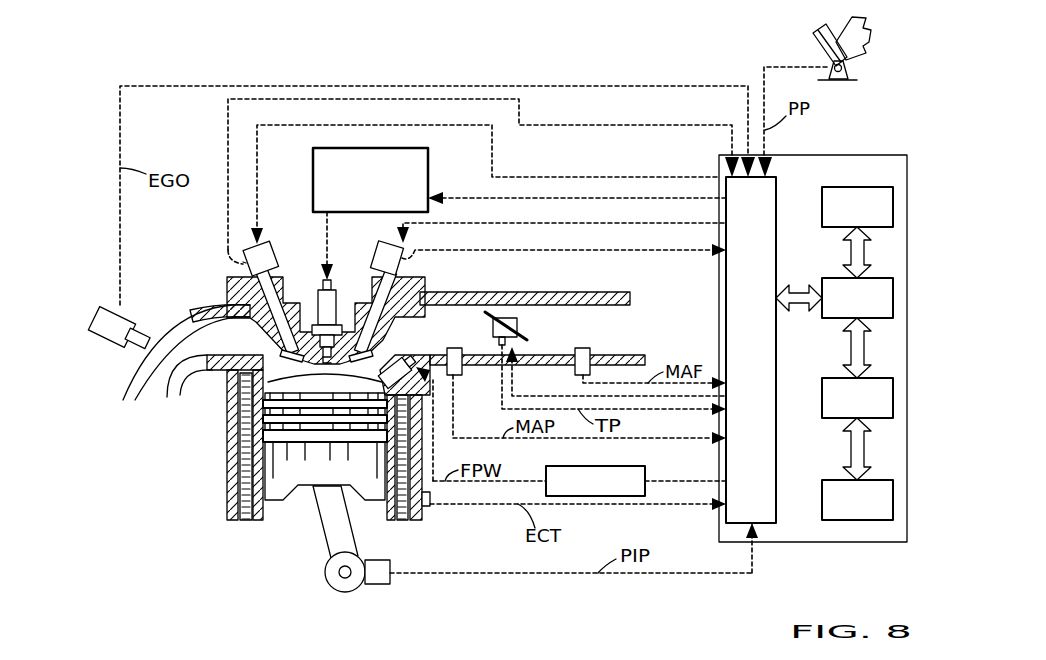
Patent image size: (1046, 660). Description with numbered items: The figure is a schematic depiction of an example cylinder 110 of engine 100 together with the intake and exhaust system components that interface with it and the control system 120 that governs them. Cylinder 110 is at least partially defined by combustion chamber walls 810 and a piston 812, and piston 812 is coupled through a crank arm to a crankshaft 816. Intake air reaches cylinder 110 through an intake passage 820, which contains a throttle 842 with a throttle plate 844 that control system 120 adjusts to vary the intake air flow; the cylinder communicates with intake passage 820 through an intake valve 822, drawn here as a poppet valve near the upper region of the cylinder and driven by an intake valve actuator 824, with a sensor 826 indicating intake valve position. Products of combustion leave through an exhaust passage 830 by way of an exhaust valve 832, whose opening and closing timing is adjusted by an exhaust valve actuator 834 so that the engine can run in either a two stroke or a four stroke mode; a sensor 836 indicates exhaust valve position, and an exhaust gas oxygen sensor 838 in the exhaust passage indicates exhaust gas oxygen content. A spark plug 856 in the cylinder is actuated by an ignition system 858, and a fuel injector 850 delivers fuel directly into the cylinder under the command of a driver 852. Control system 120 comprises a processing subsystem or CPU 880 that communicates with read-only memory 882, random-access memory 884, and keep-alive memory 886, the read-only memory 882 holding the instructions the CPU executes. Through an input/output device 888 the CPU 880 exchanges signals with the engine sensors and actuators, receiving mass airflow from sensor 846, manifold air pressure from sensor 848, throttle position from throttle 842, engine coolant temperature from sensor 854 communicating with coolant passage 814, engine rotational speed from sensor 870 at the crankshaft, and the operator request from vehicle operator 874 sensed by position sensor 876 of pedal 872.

The engine 100 is at (170, 474).
The cylinder 110 is at (262, 382).
The control system 120 is at (805, 155).
The combustion chamber walls 810 is at (268, 515).
The piston 812 is at (307, 472).
The coolant passage 814 is at (397, 518).
The crankshaft 816 is at (335, 592).
The intake passage 820 is at (592, 339).
The intake valve 822 is at (358, 350).
The intake valve actuator 824 is at (378, 246).
The intake valve position sensor 826 is at (414, 258).
The exhaust passage 830 is at (213, 347).
The exhaust valve 832 is at (280, 347).
The exhaust valve actuator 834 is at (270, 243).
The exhaust valve position sensor 836 is at (244, 262).
The exhaust gas oxygen sensor 838 is at (112, 348).
The throttle 842 is at (511, 318).
The throttle plate 844 is at (486, 311).
The mass airflow sensor 846 is at (578, 374).
The manifold air pressure sensor 848 is at (458, 376).
The fuel injector 850 is at (398, 364).
The driver 852 is at (645, 472).
The engine coolant temperature sensor 854 is at (430, 508).
The spark plug 856 is at (318, 312).
The ignition system 858 is at (430, 165).
The engine speed sensor 870 is at (380, 585).
The pedal 872 is at (813, 40).
The vehicle operator 874 is at (868, 32).
The position sensor 876 is at (851, 69).
The processing subsystem (CPU) 880 is at (822, 278).
The read-only memory (ROM) 882 is at (822, 190).
The random-access memory (RAM) 884 is at (822, 378).
The keep-alive memory (KAM) 886 is at (822, 482).
The input/output device 888 is at (776, 480).